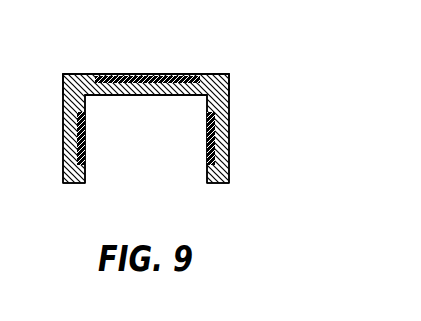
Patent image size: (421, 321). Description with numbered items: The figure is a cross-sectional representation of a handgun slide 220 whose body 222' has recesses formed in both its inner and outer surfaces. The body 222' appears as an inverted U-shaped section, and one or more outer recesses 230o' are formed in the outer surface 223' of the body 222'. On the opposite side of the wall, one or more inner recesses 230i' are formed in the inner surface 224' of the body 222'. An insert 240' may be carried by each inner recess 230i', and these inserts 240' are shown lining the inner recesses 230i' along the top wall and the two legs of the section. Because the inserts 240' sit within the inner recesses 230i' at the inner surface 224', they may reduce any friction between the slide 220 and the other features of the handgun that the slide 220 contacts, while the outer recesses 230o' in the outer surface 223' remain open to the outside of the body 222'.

The slide 220 is at (235, 40).
The body 222' is at (185, 81).
The outer surface 223' is at (146, 45).
The inner surface 224' is at (146, 197).
The outer recesses 230o' is at (128, 103).
The inner recesses 230i' is at (198, 155).
The insert 240' is at (146, 85).